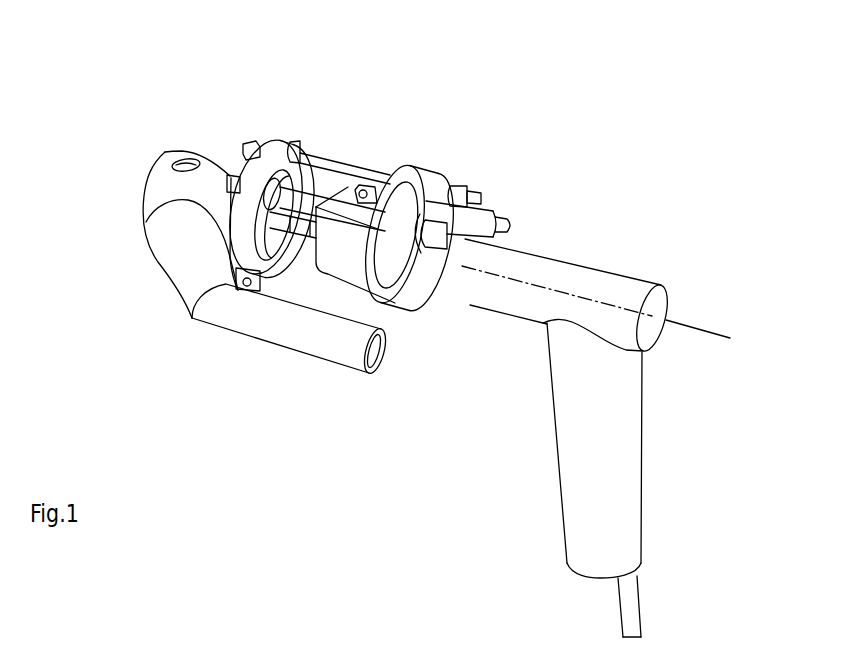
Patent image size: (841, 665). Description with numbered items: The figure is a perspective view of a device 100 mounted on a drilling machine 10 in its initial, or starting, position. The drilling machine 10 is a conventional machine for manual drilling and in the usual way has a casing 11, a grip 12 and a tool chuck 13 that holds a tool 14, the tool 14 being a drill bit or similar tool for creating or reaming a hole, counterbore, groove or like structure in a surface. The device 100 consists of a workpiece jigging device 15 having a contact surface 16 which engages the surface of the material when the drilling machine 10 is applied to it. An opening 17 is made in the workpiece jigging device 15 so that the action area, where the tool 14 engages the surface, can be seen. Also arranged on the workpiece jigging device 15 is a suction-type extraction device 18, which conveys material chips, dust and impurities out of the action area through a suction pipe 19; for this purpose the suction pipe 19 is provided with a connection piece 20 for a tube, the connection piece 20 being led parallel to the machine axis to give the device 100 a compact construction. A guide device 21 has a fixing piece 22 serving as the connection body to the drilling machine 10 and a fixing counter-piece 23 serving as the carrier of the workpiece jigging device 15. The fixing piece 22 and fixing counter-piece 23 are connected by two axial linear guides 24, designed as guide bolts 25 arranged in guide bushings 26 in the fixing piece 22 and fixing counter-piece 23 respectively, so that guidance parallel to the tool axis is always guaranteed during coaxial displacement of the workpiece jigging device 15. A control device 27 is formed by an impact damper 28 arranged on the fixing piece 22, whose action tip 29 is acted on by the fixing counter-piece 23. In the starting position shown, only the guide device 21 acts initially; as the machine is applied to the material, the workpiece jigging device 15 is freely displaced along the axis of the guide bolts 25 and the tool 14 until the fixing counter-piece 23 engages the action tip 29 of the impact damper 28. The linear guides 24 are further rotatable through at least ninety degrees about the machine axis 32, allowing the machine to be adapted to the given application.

The device 100 is at (352, 110).
The drilling machine 10 is at (622, 260).
The casing 11 is at (528, 263).
The grip 12 is at (627, 507).
The tool chuck 13 is at (350, 258).
The tool 14 is at (305, 222).
The workpiece jigging device 15 is at (195, 143).
The contact surface 16 is at (143, 190).
The opening 17 is at (176, 160).
The suction-type extraction device 18 is at (135, 272).
The suction pipe 19 is at (185, 270).
The connection piece 20 is at (250, 325).
The guide device 21 is at (378, 162).
The fixing piece 22 is at (412, 170).
The fixing counter-piece 23 is at (275, 141).
The linear guides 24 is at (348, 170).
The guide bolts 25 is at (300, 200).
The guide bushings 26 is at (256, 144).
The control device 27 is at (513, 210).
The impact damper 28 is at (478, 250).
The action tip 29 is at (323, 225).
The machine axis 32 is at (707, 333).